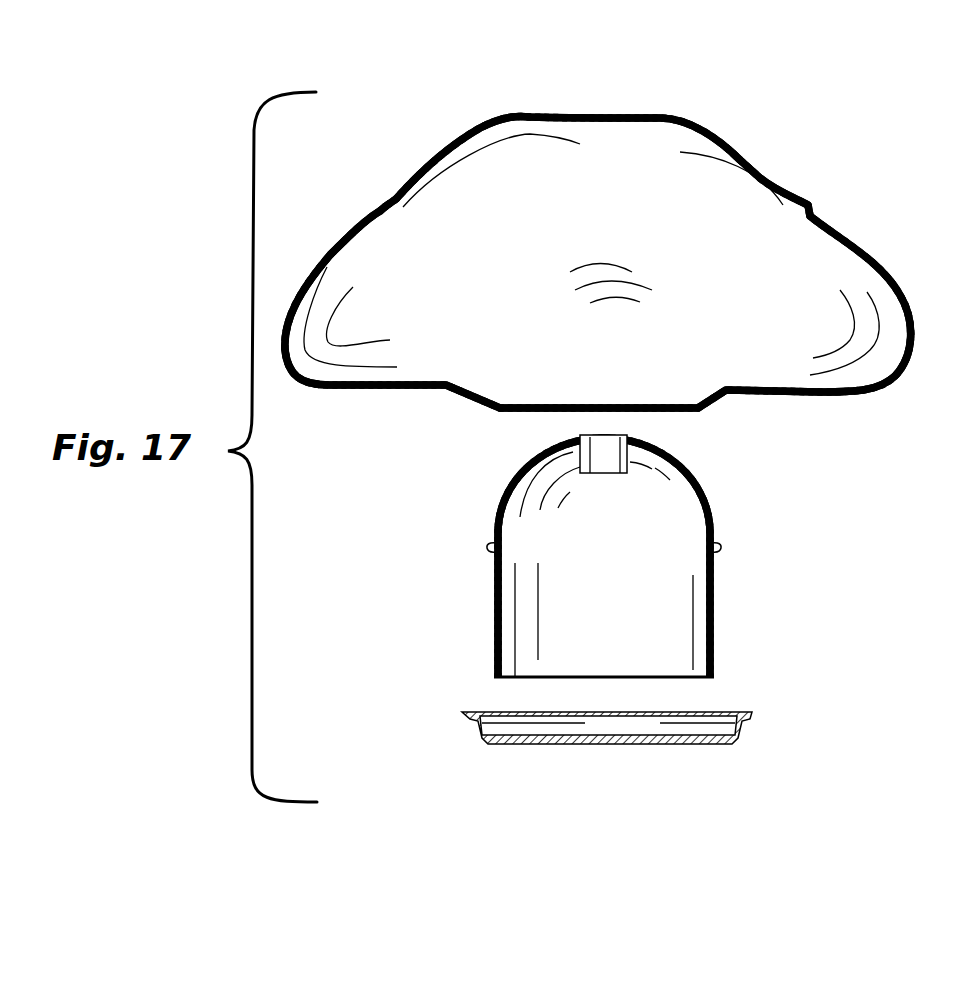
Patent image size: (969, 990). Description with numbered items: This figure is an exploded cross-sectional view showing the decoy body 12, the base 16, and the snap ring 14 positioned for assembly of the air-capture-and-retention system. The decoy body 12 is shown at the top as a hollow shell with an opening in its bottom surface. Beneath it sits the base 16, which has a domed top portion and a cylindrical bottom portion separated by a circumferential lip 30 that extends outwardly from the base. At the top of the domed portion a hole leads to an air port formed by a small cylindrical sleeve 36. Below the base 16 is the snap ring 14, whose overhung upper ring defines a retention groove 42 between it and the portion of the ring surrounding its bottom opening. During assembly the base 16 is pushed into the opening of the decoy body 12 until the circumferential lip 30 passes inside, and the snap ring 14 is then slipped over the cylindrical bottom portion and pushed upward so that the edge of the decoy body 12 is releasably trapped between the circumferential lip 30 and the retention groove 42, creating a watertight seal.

The decoy body 12 is at (710, 118).
The snap ring 14 is at (772, 718).
The base 16 is at (742, 584).
The circumferential lip 30 is at (722, 548).
The small cylindrical sleeve 36 is at (580, 463).
The retention groove 42 is at (668, 745).